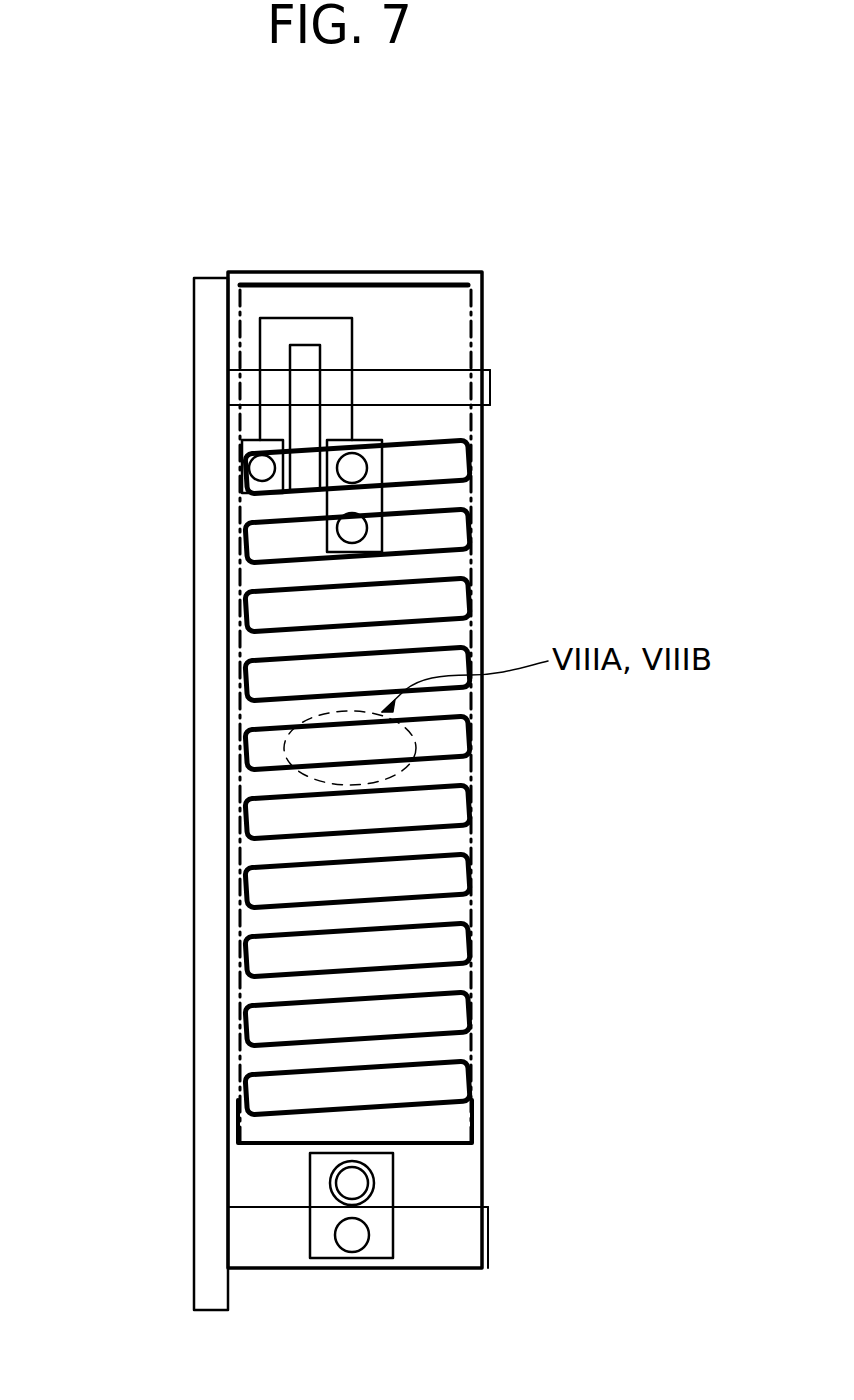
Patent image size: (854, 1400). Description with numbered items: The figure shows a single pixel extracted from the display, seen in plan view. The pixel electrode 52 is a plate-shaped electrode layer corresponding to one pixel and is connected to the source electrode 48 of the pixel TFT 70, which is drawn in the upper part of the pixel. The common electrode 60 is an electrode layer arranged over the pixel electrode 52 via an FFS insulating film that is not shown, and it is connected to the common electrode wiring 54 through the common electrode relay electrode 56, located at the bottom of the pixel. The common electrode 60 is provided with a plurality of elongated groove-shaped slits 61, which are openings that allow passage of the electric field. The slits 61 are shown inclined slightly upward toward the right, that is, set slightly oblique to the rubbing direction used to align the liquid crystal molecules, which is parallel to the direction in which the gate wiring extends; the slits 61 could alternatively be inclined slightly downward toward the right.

The common electrode 60 is at (310, 270).
The pixel electrode 52 is at (433, 290).
The pixel TFT 70 is at (258, 345).
The source electrode 48 is at (370, 498).
The slits 61 is at (245, 755).
The common electrode wiring 54 is at (252, 1233).
The common electrode relay electrode 56 is at (385, 1177).